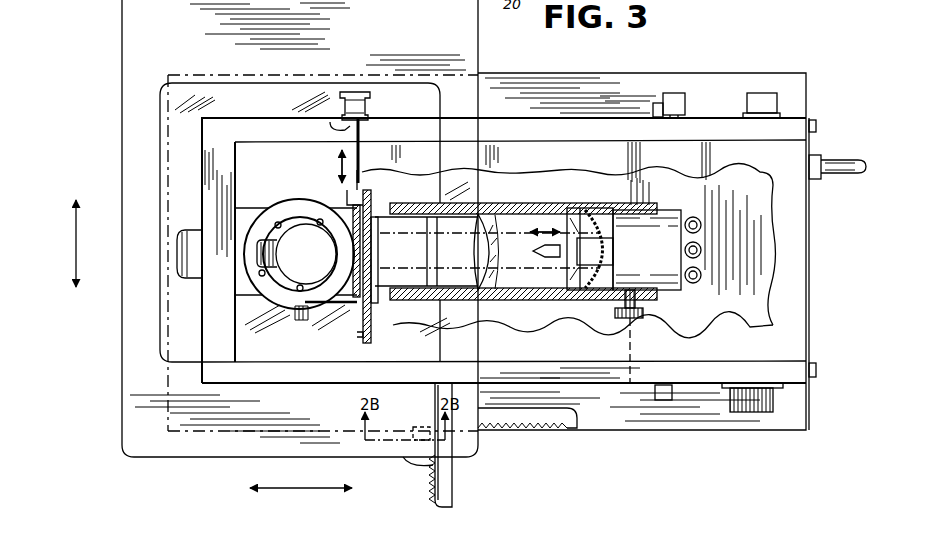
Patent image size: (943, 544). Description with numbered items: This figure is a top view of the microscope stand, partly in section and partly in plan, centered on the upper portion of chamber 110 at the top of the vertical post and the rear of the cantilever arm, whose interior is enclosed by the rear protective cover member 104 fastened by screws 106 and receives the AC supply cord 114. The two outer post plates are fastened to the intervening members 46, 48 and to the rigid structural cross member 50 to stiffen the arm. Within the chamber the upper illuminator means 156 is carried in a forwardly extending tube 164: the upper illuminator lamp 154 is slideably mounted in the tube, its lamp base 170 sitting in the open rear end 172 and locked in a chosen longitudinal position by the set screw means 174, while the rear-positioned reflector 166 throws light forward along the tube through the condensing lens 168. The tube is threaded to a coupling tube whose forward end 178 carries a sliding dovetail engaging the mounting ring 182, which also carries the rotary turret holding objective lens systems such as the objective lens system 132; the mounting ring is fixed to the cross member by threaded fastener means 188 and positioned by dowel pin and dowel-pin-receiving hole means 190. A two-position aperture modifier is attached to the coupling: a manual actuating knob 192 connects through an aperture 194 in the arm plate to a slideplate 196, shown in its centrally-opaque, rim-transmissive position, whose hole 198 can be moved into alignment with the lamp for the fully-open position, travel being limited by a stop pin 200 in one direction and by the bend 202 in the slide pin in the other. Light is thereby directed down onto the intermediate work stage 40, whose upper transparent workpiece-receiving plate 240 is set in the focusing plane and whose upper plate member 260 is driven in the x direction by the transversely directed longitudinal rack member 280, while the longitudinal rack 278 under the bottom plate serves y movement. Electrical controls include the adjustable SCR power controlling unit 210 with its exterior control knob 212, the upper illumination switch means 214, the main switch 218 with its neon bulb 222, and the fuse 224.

The intermediate work stage 40 is at (118, 413).
The intervening member 46 is at (790, 323).
The intervening member 48 is at (460, 156).
The rigid structural cross member 50 is at (208, 202).
The rear protective cover member 104 is at (810, 248).
The screws 106 is at (818, 125).
The upper portion of chamber 110 is at (758, 192).
The AC supply cord 114 is at (863, 166).
The objective lens system 132 is at (176, 255).
The upper illuminator lamp 154 is at (517, 302).
The upper illuminator means 156 is at (622, 188).
The tube 164 is at (545, 293).
The rear-positioned reflector 166 is at (598, 288).
The condensing lens 168 is at (503, 203).
The lamp base 170 is at (647, 250).
The open rear end 172 is at (660, 294).
The set screw means 174 is at (641, 318).
The forward end of coupling tube 178 is at (340, 303).
The mounting ring 182 is at (300, 225).
The threaded fastener means 188 is at (248, 265).
The dowel pin and dowel-pin-receiving hole means 190 is at (257, 280).
The manual actuating knob 192 is at (358, 92).
The aperture 194 is at (340, 123).
The slideplate 196 is at (410, 201).
The hole 198 is at (377, 303).
The stop pin 200 is at (365, 333).
The bend 202 is at (362, 175).
The adjustable SCR power controlling unit 210 is at (735, 412).
The exterior control knob 212 is at (765, 432).
The upper illumination switch means 214 is at (657, 96).
The main switch 218 is at (695, 84).
The neon bulb 222 is at (674, 93).
The fuse 224 is at (770, 93).
The upper transparent workpiece-receiving plate 240 is at (170, 108).
The upper plate member 260 is at (140, 130).
The longitudinal rack 278 is at (543, 437).
The transversely directed longitudinal rack member 280 is at (460, 490).